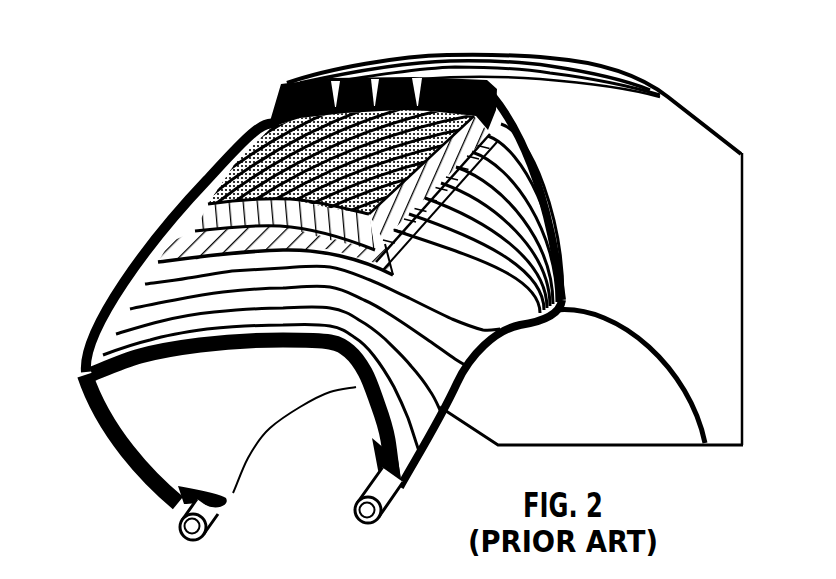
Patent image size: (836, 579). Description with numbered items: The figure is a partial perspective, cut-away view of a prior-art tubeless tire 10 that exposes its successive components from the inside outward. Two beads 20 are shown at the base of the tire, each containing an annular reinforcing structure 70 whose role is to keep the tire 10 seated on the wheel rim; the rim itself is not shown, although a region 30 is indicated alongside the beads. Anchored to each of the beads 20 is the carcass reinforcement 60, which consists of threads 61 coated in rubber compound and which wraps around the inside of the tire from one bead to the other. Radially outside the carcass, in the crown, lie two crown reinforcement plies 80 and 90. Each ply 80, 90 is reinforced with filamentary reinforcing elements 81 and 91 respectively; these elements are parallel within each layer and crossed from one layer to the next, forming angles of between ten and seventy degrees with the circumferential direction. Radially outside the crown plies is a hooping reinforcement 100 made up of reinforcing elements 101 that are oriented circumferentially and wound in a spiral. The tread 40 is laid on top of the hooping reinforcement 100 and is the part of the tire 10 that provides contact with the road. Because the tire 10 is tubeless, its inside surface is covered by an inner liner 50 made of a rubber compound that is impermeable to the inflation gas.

The tire 10 is at (682, 42).
The beads 20 is at (343, 477).
The rim 30 is at (587, 217).
The tread 40 is at (326, 79).
The inner liner 50 is at (205, 413).
The carcass reinforcement 60 is at (60, 246).
The threads 61 is at (160, 281).
The annular reinforcing structures 70 is at (358, 513).
The ply 80 is at (92, 233).
The filamentary reinforcing elements 81 is at (190, 214).
The ply 90 is at (100, 158).
The filamentary reinforcing elements 91 is at (226, 182).
The hooping reinforcement 100 is at (150, 19).
The reinforcing elements 101 is at (262, 147).